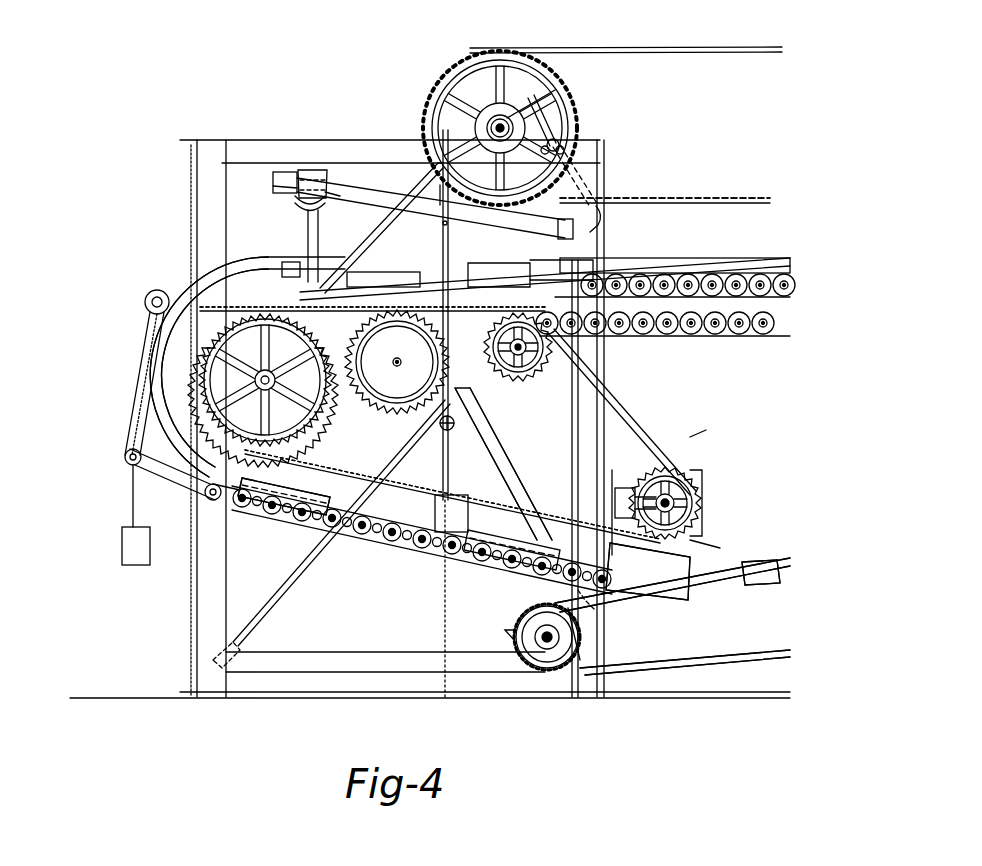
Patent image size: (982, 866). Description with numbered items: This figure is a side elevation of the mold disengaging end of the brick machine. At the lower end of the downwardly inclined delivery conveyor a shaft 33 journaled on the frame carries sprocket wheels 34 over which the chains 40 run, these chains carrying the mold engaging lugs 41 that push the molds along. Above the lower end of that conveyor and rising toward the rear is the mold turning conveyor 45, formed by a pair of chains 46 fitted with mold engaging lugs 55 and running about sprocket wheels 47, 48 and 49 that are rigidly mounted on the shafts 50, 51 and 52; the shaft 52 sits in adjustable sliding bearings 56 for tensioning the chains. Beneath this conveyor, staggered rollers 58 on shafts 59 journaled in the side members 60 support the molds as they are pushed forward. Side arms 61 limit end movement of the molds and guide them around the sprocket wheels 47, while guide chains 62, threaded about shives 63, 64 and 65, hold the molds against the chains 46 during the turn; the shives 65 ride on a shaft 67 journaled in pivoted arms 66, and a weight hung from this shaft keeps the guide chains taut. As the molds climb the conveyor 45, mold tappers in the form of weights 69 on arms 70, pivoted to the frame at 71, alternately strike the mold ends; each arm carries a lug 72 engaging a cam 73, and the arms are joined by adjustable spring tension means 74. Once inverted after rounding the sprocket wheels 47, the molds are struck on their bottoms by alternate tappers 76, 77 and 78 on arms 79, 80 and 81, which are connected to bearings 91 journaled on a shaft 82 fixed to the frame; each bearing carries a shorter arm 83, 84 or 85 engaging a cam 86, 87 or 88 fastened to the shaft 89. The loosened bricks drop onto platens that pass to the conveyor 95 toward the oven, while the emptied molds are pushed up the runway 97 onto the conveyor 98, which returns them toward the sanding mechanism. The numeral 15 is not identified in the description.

The tray 15 is at (530, 266).
The shaft 33 is at (545, 650).
The sprocket wheels 34 is at (574, 660).
The chains 40 is at (738, 660).
The mold engaging lugs 41 is at (690, 580).
The mold turning conveyor 45 is at (503, 464).
The chains 46 is at (630, 408).
The sprocket wheels 47 is at (330, 424).
The sprocket wheels 48 is at (526, 380).
The sprocket wheels 49 is at (640, 475).
The shaft 50 is at (278, 374).
The shaft 51 is at (508, 370).
The shaft 52 is at (700, 503).
The mold engaging lugs 55 is at (708, 541).
The adjustable sliding bearings 56 is at (700, 482).
The rollers 58 is at (400, 550).
The shafts 59 is at (478, 562).
The side members 60 is at (228, 500).
The side arms 61 is at (193, 288).
The guide chains 62 is at (135, 382).
The shives 63 is at (145, 300).
The shives 64 is at (206, 500).
The shives 65 is at (125, 460).
The pivoted arms 66 is at (178, 478).
The shaft 67 is at (128, 470).
The weights 69 is at (451, 513).
The arms 70 is at (450, 248).
The pivots 71 is at (441, 224).
The lug 72 is at (430, 368).
The cam 73 is at (397, 362).
The adjustable spring tension means 74 is at (442, 430).
The tapper 76 is at (327, 176).
The tapper 77 is at (328, 198).
The tapper 78 is at (308, 210).
The arm 79 is at (395, 195).
The arm 80 is at (273, 184).
The arm 81 is at (282, 195).
The shaft 82 is at (603, 222).
The shorter arm 83 is at (548, 96).
The shorter arm 84 is at (562, 140).
The shorter arm 85 is at (568, 150).
The cam 86 is at (508, 102).
The cam 87 is at (556, 120).
The cam 88 is at (518, 134).
The shaft 89 is at (487, 128).
The bearings 91 is at (602, 206).
The conveyor 95 is at (748, 336).
The runway 97 is at (418, 276).
The conveyor 98 is at (728, 268).